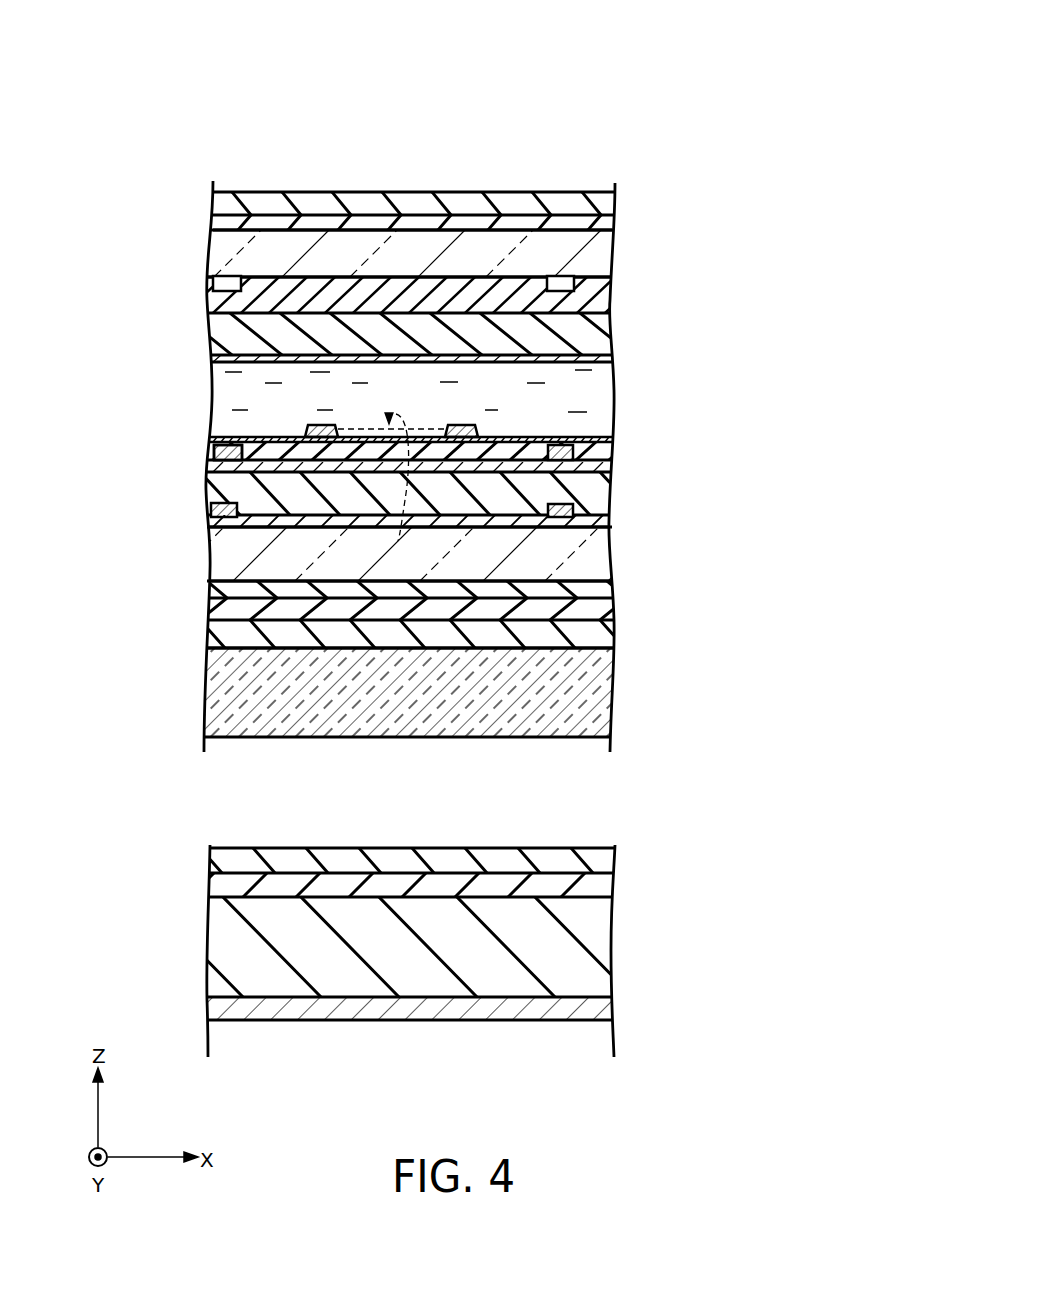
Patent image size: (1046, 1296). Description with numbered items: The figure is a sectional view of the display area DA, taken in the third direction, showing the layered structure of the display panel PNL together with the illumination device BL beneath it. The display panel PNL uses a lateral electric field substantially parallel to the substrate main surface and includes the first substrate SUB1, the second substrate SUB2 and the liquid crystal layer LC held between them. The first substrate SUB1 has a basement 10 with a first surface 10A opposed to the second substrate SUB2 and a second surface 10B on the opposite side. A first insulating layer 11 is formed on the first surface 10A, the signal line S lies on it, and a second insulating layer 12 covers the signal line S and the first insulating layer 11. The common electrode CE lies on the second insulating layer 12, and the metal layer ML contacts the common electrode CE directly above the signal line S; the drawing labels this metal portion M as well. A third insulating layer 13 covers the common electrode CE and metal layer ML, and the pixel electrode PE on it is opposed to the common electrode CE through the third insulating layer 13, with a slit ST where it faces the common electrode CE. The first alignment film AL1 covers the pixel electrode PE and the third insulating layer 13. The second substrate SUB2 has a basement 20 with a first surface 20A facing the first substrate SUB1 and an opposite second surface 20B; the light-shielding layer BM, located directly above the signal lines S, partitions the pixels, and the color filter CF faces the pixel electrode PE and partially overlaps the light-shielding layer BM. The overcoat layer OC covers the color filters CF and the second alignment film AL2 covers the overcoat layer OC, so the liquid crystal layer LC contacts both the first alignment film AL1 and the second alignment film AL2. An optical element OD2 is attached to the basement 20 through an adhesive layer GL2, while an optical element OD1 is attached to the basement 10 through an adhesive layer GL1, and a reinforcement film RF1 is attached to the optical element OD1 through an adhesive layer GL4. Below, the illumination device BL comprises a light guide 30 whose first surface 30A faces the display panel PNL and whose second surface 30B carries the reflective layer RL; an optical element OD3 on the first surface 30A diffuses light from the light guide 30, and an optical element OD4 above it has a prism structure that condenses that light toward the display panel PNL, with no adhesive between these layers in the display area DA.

The display area DA is at (238, 106).
The display panel PNL is at (609, 168).
The light-shielding layer BM is at (229, 278).
The color filter CF is at (381, 290).
The optical element OD2 is at (618, 200).
The adhesive layer GL2 is at (610, 222).
The second surface 20B is at (585, 226).
The basement 20 is at (602, 258).
The first surface 20A is at (593, 283).
The overcoat layer OC is at (603, 330).
The second alignment film AL2 is at (446, 361).
The second substrate SUB2 is at (484, 256).
The liquid crystal layer LC is at (594, 390).
The pixel electrode PE is at (335, 425).
The slit ST is at (399, 490).
The common electrode CE is at (513, 460).
The first alignment film AL1 is at (578, 437).
The metal layer ML is at (574, 440).
The metal wiring M is at (234, 445).
The third insulating layer 13 is at (602, 456).
The second insulating layer 12 is at (600, 490).
The signal line S is at (216, 519).
The first insulating layer 11 is at (597, 533).
The basement 10 is at (604, 563).
The first surface 10A is at (578, 515).
The second surface 10B is at (450, 590).
The first substrate SUB1 is at (466, 494).
The adhesive layer GL1 is at (606, 610).
The optical element OD1 is at (603, 638).
The adhesive layer GL4 is at (603, 655).
The reinforcement film RF1 is at (603, 700).
The illumination device BL is at (504, 939).
The optical element OD4 is at (513, 860).
The optical element OD3 is at (557, 885).
The light guide 30 is at (605, 950).
The first surface 30A is at (596, 886).
The second surface 30B is at (589, 1001).
The reflective layer RL is at (520, 1007).